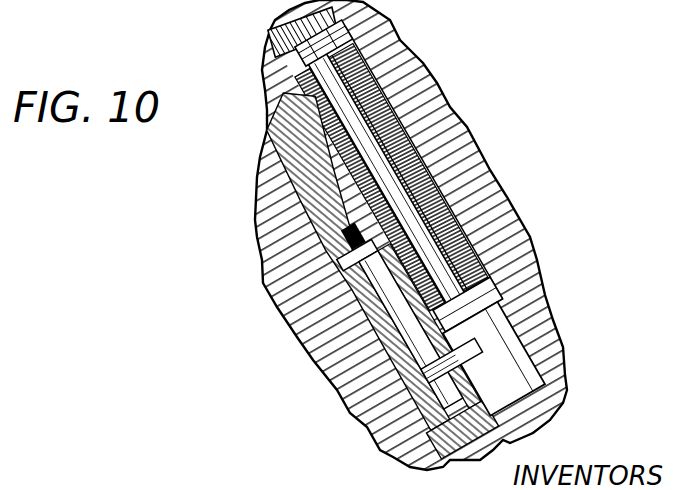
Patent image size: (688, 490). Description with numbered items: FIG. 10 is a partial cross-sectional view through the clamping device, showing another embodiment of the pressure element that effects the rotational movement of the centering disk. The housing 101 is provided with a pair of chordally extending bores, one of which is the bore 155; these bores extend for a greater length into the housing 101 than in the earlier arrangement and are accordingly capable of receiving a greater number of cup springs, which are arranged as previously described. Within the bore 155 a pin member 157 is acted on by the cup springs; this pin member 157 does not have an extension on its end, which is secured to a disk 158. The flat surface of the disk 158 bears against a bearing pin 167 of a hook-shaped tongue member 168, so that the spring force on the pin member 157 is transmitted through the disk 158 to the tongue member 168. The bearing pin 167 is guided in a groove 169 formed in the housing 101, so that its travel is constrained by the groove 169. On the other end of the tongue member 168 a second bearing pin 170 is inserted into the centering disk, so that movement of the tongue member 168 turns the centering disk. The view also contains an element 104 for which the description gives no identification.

The housing 101 is at (411, 235).
The sleeve 104 is at (347, 255).
The chordally extending bore 155 is at (435, 177).
The pin member 157 is at (349, 168).
The disk 158 is at (516, 291).
The bearing pin 167 is at (524, 358).
The hook-shaped tongue member 168 is at (369, 367).
The groove 169 is at (419, 444).
The bearing pin 170 is at (334, 319).